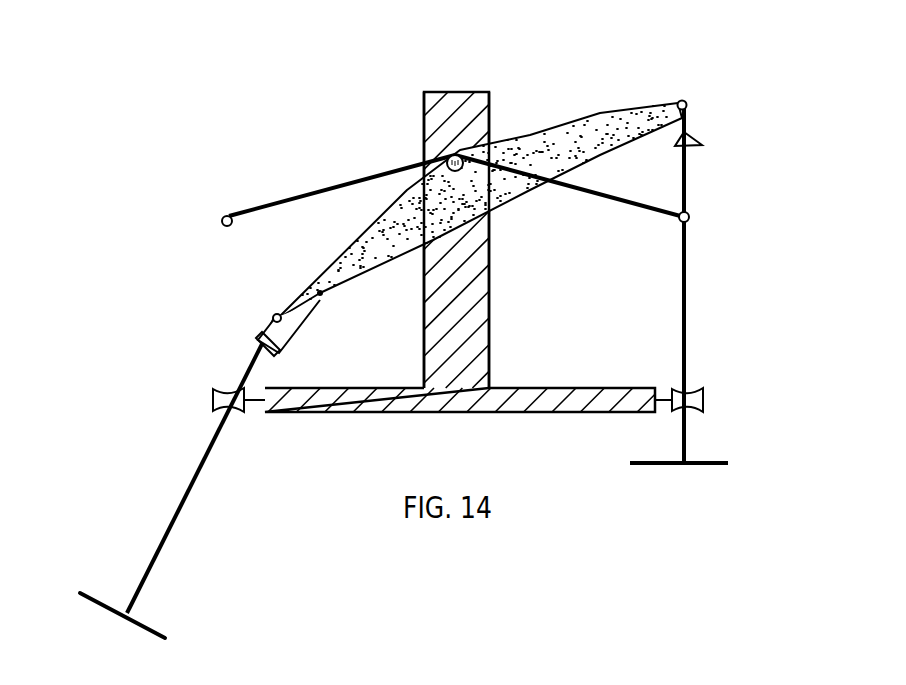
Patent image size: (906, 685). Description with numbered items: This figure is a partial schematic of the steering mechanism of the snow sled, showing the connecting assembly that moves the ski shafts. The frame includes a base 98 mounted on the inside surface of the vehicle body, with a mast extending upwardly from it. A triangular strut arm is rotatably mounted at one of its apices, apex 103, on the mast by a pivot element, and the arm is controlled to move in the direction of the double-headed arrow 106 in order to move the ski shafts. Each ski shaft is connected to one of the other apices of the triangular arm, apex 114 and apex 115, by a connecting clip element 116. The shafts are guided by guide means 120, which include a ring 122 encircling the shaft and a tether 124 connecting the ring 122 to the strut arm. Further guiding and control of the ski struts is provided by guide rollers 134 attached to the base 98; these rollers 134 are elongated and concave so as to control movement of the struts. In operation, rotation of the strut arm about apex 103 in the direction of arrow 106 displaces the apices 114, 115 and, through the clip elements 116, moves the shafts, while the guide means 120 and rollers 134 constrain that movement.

The base 98 is at (553, 385).
The apex 103 is at (466, 152).
The double-headed arrow 106 is at (435, 86).
The apex 114 is at (293, 297).
The apex 115 is at (673, 103).
The connecting clip element 116 is at (689, 104).
The guide means 120 is at (242, 323).
The ring 122 is at (256, 340).
The tether 124 is at (300, 322).
The guide roller 134 is at (705, 397).